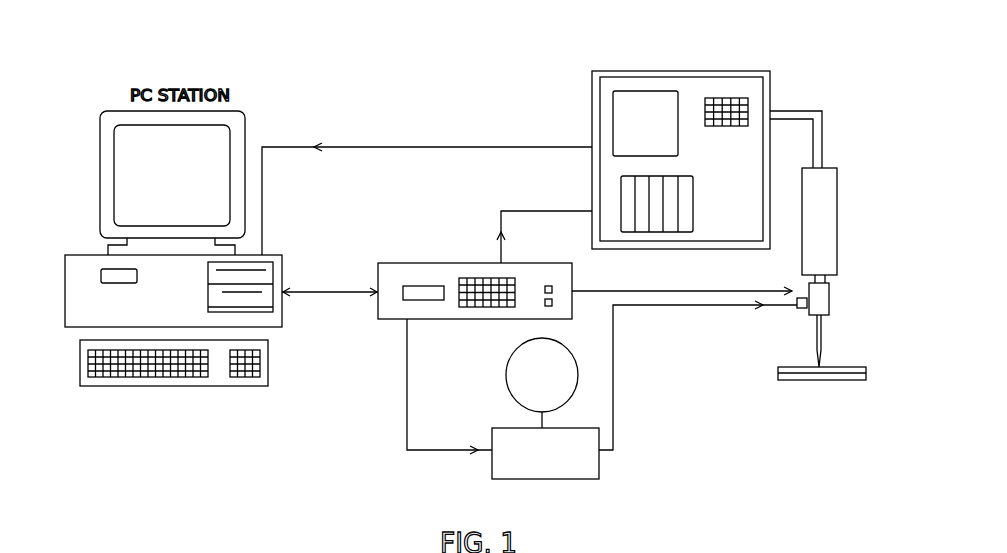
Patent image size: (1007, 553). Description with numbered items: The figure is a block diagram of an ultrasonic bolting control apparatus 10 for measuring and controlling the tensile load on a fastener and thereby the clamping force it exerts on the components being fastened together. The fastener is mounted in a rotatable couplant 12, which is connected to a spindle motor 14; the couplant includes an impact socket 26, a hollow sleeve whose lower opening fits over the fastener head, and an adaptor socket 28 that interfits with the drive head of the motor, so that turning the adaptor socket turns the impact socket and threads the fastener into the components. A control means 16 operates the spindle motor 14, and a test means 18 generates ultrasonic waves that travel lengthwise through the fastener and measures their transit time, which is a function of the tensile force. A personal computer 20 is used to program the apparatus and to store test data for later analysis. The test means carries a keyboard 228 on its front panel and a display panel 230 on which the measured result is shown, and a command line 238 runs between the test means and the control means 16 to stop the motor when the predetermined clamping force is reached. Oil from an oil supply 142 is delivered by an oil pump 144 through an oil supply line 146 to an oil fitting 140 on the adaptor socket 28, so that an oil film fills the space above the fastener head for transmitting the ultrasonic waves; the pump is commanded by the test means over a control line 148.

The apparatus 10 is at (516, 68).
The rotatable couplant 12 is at (846, 284).
The spindle motor 14 is at (837, 224).
The control means 16 is at (691, 66).
The test means 18 is at (463, 248).
The computer 20 is at (327, 110).
The impact socket 26 is at (822, 333).
The adaptor socket 28 is at (829, 300).
The oil fitting 140 is at (800, 309).
The oil supply 142 is at (507, 384).
The oil pump 144 is at (555, 480).
The oil supply line 146 is at (613, 386).
The control line 148 is at (407, 380).
The keyboard 228 is at (501, 272).
The display panel 230 is at (403, 290).
The command line 238 is at (568, 177).